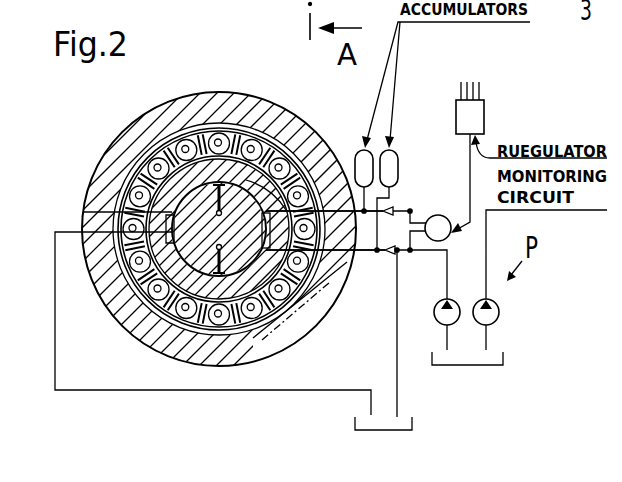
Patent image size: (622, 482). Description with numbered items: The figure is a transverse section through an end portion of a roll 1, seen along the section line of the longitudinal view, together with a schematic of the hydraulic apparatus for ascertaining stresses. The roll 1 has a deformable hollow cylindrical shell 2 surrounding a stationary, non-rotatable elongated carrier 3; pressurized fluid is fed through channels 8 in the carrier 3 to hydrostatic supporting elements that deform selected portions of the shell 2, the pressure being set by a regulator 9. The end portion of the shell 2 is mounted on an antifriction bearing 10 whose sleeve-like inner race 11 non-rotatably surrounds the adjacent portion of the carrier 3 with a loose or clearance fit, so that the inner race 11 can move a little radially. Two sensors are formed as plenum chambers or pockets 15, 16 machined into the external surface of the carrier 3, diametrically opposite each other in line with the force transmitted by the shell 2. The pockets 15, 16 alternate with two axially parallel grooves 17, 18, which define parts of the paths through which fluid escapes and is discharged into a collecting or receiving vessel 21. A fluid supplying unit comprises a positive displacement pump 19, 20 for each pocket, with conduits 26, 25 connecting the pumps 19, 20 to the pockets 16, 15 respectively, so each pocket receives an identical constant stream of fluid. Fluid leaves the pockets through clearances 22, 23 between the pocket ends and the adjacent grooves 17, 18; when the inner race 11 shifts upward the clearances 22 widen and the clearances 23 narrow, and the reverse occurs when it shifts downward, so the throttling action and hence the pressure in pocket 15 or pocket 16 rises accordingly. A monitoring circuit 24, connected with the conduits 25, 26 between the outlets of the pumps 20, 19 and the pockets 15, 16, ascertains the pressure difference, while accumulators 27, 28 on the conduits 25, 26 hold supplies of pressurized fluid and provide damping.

The roll 1 is at (124, 97).
The deformable hollow cylindrical shell 2 is at (210, 95).
The carrier 3 is at (190, 223).
The channels 8 is at (490, 72).
The regulator 9 is at (472, 116).
The antifriction bearing 10 is at (187, 132).
The inner race 11 is at (255, 178).
The plenum chamber 15 is at (221, 183).
The plenum chamber 16 is at (253, 322).
The groove 17 is at (190, 244).
The groove 18 is at (318, 270).
The positive displacement pump 19 is at (440, 317).
The positive displacement pump 20 is at (497, 317).
The collecting or receiving vessel 21 is at (414, 421).
The clearances 22 is at (165, 188).
The clearances 23 is at (140, 281).
The monitoring circuit 24 is at (439, 226).
The conduit 25 is at (422, 209).
The conduit 26 is at (427, 252).
The accumulator 27 is at (362, 162).
The accumulator 28 is at (392, 162).